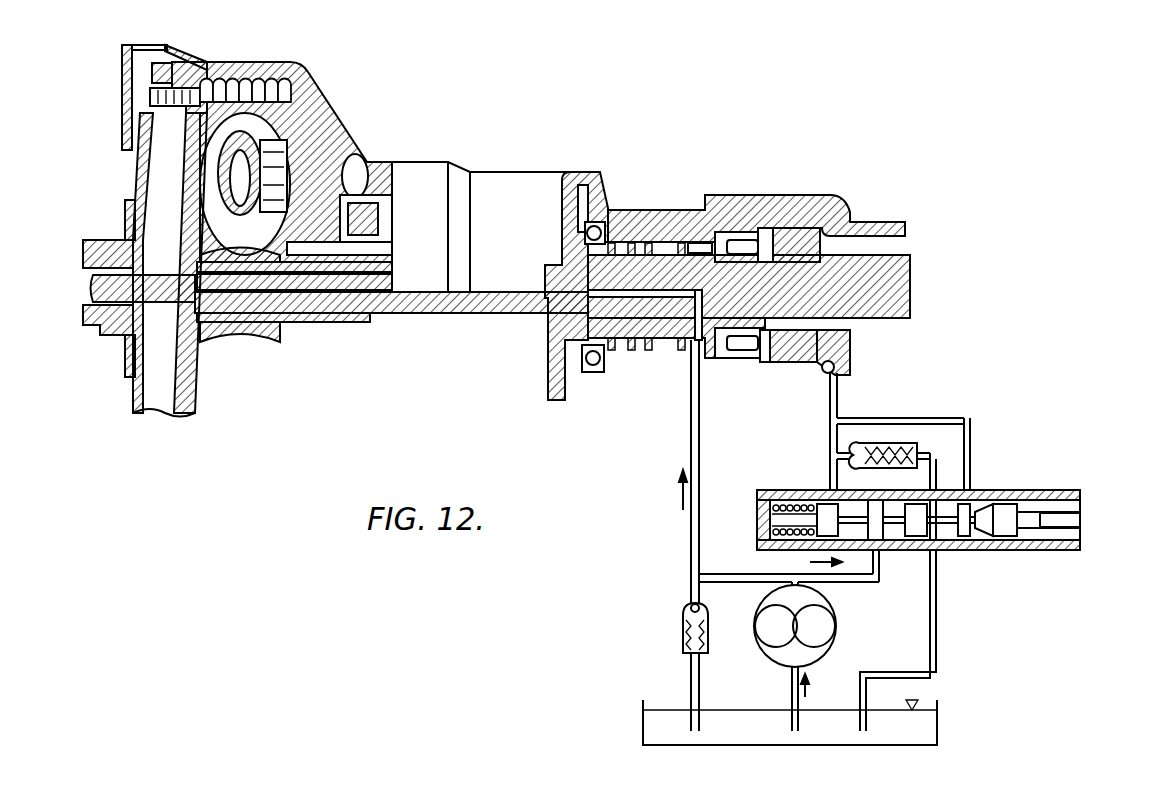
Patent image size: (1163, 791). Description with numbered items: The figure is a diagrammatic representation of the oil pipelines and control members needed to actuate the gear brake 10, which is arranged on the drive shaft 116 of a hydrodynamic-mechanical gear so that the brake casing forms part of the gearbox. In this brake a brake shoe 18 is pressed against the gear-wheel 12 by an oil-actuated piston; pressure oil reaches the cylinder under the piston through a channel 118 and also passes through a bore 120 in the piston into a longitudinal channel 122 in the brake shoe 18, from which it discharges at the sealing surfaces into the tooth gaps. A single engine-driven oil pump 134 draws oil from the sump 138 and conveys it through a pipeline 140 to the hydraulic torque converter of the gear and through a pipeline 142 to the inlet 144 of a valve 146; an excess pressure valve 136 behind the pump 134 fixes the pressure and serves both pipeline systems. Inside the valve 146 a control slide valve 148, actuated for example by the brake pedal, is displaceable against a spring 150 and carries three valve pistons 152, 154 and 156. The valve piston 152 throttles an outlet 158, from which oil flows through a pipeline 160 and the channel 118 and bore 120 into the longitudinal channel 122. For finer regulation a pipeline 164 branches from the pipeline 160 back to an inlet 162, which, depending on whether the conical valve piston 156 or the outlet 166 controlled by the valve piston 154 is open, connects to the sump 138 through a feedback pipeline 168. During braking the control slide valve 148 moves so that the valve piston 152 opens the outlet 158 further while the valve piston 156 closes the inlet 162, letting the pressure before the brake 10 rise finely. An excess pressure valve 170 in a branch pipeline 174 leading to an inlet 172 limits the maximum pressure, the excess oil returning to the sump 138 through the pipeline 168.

The gear brake 10 is at (757, 378).
The gear-wheel 12 is at (796, 236).
The brake shoe 18 is at (843, 345).
The drive shaft 116 is at (888, 281).
The channel 118 is at (828, 383).
The bore 120 is at (793, 346).
The longitudinal channel 122 is at (845, 354).
The oil pump 134 is at (820, 630).
The excess pressure valve 136 is at (683, 648).
The sump 138 is at (732, 722).
The pipeline 140 is at (692, 408).
The pipeline 142 is at (855, 580).
The inlet 144 is at (877, 552).
The valve 146 is at (1052, 553).
The control slide valve 148 is at (1080, 524).
The spring 150 is at (760, 547).
The valve piston 152 is at (825, 507).
The valve piston 154 is at (969, 456).
The valve piston 156 is at (1003, 522).
The outlet 158 is at (836, 422).
The pipeline 160 is at (830, 443).
The inlet 162 is at (975, 500).
The pipeline 164 is at (905, 421).
The outlet 166 is at (938, 553).
The feedback pipeline 168 is at (934, 652).
The excess pressure valve 170 is at (858, 450).
The inlet 172 is at (940, 470).
The branch pipeline 174 is at (930, 453).